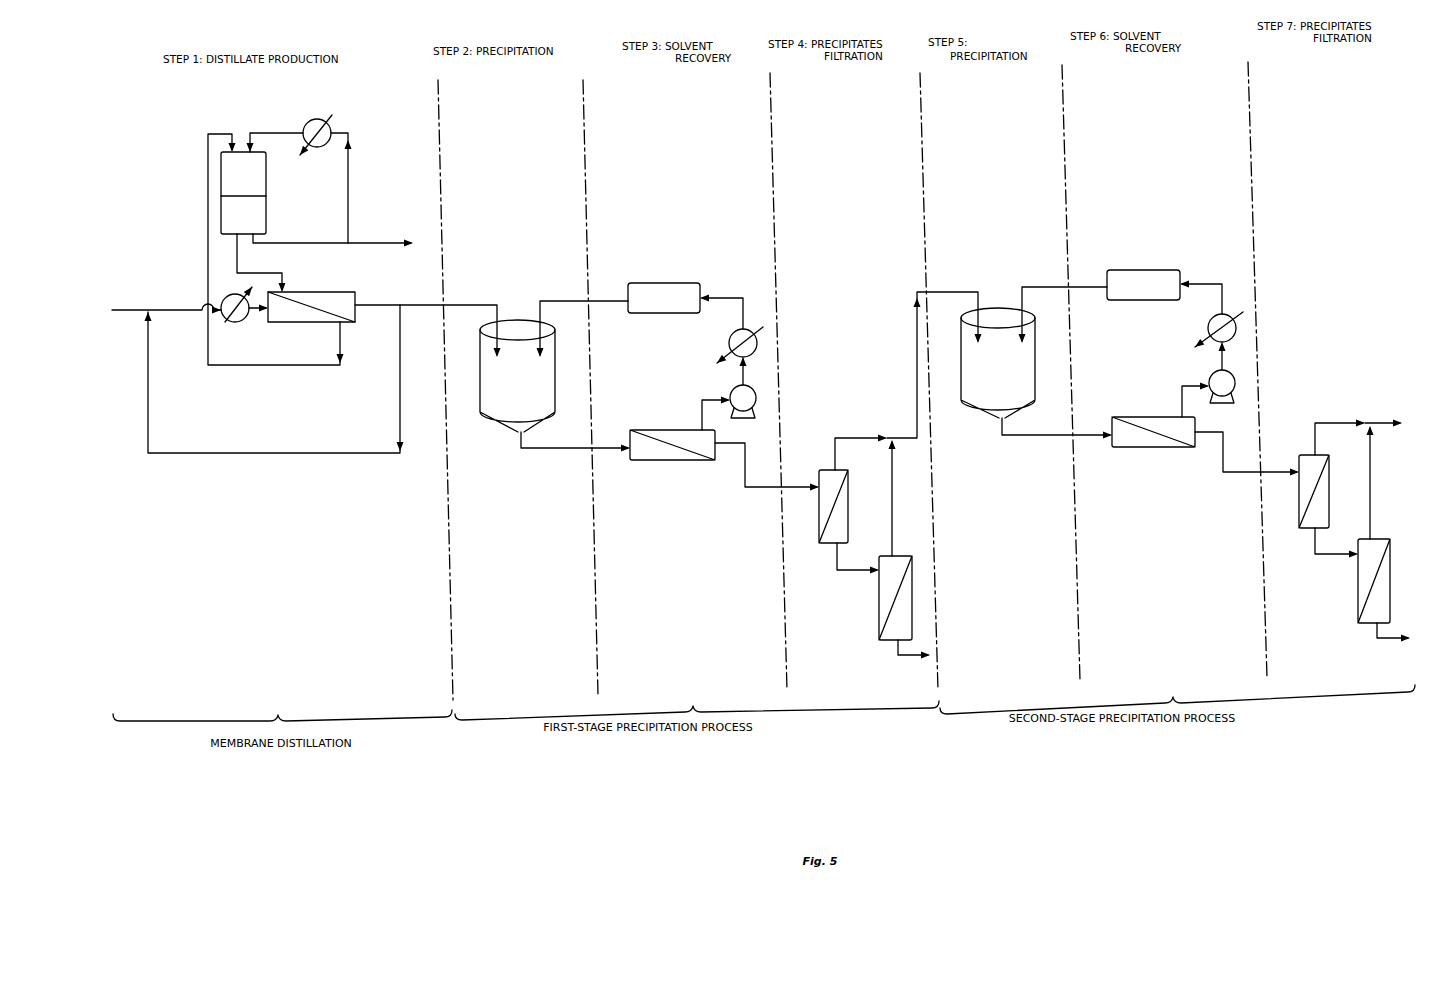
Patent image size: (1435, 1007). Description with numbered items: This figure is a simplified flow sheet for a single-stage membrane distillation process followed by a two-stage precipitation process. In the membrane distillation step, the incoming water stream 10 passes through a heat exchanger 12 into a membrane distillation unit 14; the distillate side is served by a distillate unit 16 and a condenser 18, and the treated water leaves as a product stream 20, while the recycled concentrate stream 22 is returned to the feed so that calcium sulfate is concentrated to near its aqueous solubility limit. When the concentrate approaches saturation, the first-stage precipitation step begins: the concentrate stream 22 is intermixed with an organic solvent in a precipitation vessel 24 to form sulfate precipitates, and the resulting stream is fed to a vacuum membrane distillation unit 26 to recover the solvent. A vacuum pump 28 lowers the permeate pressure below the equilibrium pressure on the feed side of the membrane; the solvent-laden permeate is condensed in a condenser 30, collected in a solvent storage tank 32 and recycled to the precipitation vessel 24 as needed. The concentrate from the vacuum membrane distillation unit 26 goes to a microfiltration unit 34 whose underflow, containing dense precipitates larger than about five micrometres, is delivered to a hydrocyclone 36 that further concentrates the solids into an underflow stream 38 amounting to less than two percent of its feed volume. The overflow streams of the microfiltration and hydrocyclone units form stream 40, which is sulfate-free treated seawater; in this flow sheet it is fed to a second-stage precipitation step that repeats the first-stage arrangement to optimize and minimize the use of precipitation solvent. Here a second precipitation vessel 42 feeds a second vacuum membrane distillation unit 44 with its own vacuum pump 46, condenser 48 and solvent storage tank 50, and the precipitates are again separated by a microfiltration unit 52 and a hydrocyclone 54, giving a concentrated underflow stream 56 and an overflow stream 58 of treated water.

The water stream 10 is at (166, 300).
The heat exchanger 12 is at (252, 324).
The membrane distillation unit 14 is at (302, 326).
The distillate unit 16 is at (277, 222).
The condenser 18 is at (287, 179).
The product stream 20 is at (333, 236).
The recycled concentrate stream 22 is at (274, 387).
The precipitation vessel 24 is at (479, 413).
The vacuum membrane distillation unit 26 is at (724, 478).
The vacuum pump 28 is at (717, 393).
The condenser 30 is at (709, 330).
The solvent storage tank 32 is at (620, 299).
The microfiltration unit 34 is at (827, 468).
The hydrocyclone unit 36 is at (878, 600).
The under flow stream 38 is at (913, 657).
The over flow streams 40 is at (934, 365).
The precipitation vessel 42 is at (960, 402).
The vacuum membrane distillation unit 44 is at (1205, 469).
The vacuum pump 46 is at (1196, 379).
The condenser 48 is at (1189, 315).
The solvent storage tank 50 is at (1101, 285).
The microfiltration unit 52 is at (1305, 453).
The hydrocyclone unit 54 is at (1360, 582).
The under flow stream 56 is at (1393, 646).
The over flow stream 58 is at (1383, 415).